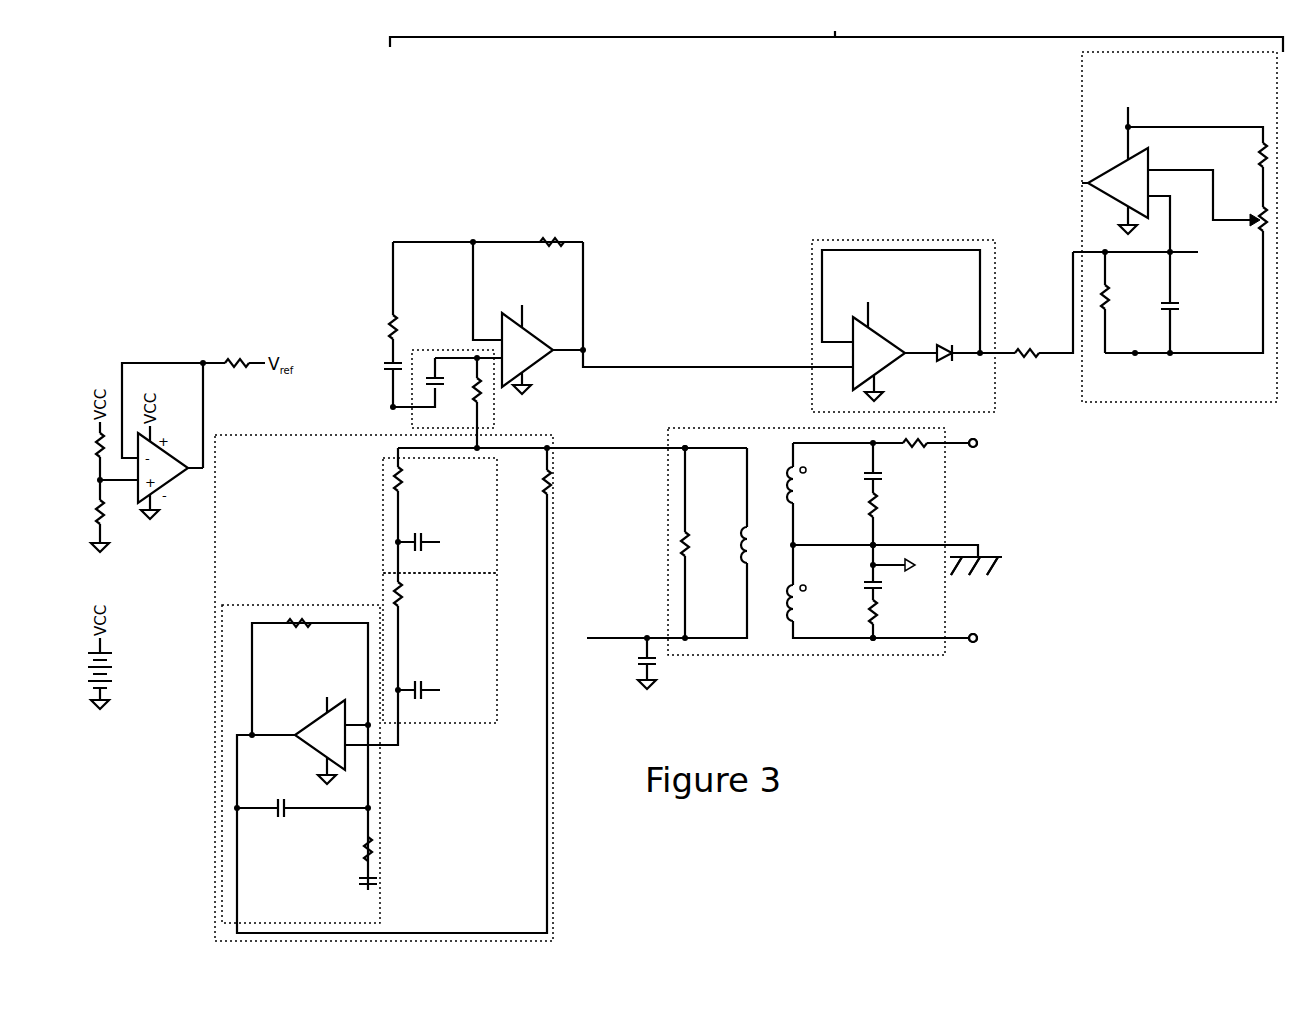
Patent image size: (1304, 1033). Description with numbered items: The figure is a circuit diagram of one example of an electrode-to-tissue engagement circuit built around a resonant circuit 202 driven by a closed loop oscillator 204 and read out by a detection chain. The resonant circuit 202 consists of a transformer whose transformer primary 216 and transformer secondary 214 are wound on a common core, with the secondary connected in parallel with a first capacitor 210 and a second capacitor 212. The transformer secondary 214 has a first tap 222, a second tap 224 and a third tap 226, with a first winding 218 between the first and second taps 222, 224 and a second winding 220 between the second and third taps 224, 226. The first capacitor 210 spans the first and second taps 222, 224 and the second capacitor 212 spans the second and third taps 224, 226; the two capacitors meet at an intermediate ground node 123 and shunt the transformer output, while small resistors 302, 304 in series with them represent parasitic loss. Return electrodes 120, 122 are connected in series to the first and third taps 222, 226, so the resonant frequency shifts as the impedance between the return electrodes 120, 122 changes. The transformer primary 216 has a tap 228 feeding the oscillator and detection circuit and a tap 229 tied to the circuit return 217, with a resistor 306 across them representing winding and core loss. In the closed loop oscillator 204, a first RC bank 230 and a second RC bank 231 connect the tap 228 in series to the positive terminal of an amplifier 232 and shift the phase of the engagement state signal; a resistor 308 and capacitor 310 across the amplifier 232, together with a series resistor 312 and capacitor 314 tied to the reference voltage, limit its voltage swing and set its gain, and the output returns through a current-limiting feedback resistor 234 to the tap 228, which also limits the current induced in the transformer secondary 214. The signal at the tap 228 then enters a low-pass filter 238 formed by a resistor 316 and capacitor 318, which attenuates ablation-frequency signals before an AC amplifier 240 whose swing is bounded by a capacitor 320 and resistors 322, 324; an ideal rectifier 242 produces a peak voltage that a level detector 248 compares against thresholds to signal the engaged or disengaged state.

The return electrode 120 is at (977, 447).
The return electrode 122 is at (977, 642).
The intermediate ground node 123 is at (992, 570).
The resonant circuit 202 is at (760, 564).
The closed loop oscillator 204 is at (356, 688).
The first capacitor 210 is at (871, 477).
The second capacitor 212 is at (870, 579).
The transformer secondary 214 is at (883, 552).
The transformer primary 216 is at (740, 536).
The circuit return 217 is at (640, 688).
The first winding 218 is at (786, 492).
The second winding 220 is at (786, 604).
The first tap 222 is at (871, 442).
The second tap 224 is at (871, 545).
The third tap 226 is at (878, 636).
The tap 228 is at (689, 452).
The tap 229 is at (647, 636).
The first RC bank 230 is at (383, 518).
The second RC bank 231 is at (383, 588).
The amplifier 232 is at (312, 748).
The current-limiting feedback resistor 234 is at (541, 492).
The filter 238 is at (594, 325).
The amplifier 240 is at (545, 345).
The rectifier 242 is at (812, 259).
The level detector 248 is at (1082, 69).
The resistor 302 is at (869, 505).
The resistor 304 is at (869, 612).
The resistor 306 is at (690, 556).
The resistor 308 is at (298, 630).
The capacitor 310 is at (281, 816).
The resistor 312 is at (362, 850).
The capacitor 314 is at (362, 882).
The resistor 316 is at (481, 400).
The capacitor 318 is at (437, 377).
The capacitor 320 is at (390, 366).
The resistor 322 is at (390, 326).
The resistor 324 is at (571, 240).